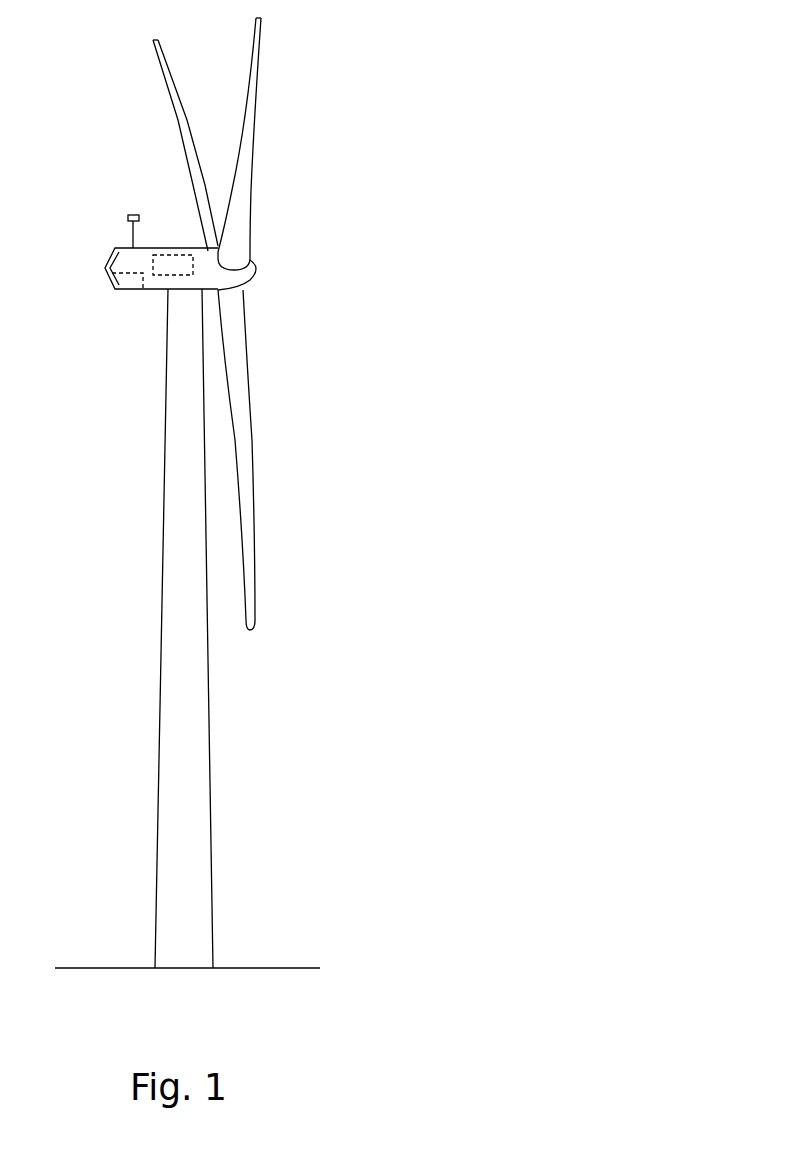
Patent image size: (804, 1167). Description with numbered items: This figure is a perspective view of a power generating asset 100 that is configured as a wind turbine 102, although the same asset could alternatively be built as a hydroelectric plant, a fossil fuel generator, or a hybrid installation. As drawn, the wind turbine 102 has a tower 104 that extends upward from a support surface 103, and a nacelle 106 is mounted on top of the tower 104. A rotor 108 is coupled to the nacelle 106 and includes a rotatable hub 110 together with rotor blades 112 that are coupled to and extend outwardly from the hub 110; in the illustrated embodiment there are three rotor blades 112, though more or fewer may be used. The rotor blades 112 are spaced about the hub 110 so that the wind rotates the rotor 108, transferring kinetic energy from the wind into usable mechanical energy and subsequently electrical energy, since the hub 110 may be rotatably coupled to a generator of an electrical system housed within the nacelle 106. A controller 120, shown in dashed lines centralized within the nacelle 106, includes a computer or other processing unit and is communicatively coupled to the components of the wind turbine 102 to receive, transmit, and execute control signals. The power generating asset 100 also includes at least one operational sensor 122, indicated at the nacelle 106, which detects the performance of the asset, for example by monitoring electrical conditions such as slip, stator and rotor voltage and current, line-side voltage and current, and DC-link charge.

The power generating asset 100 is at (362, 85).
The wind turbine 102 is at (257, 493).
The support surface 103 is at (118, 966).
The tower 104 is at (190, 712).
The nacelle 106 is at (152, 293).
The rotor 108 is at (262, 247).
The rotatable hub 110 is at (257, 273).
The rotor blade 112 is at (247, 97).
The controller 120 is at (182, 243).
The operational sensor 122 is at (105, 281).